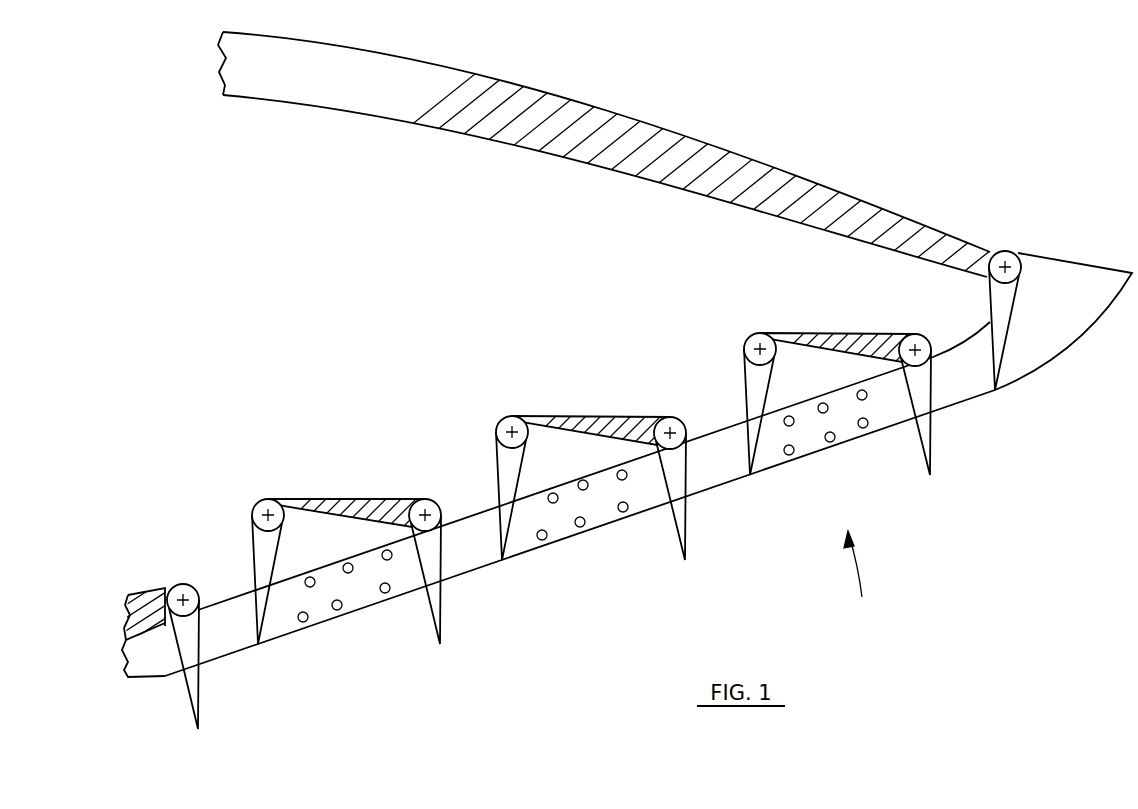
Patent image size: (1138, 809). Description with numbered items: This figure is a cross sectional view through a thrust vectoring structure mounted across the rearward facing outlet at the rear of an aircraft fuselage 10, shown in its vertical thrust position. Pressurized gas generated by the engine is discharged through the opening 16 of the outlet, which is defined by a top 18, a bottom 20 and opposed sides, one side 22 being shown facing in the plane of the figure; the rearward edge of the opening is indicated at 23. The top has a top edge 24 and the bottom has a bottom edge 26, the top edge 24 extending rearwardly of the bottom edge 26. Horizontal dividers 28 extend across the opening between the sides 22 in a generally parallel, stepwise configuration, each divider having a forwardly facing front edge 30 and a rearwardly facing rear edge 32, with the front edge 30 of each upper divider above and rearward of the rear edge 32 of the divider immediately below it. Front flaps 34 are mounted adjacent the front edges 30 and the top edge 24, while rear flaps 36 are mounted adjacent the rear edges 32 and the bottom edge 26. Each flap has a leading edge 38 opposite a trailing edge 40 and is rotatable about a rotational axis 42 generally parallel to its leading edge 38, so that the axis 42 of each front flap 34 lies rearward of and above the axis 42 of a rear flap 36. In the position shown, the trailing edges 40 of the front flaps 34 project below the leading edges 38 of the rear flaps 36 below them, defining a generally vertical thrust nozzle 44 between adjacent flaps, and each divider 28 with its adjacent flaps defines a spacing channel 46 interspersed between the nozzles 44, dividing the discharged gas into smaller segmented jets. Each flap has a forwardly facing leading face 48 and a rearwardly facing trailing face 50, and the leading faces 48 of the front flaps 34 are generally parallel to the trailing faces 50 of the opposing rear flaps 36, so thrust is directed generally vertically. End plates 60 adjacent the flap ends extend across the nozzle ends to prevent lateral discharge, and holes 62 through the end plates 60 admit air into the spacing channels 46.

The fuselage 10 is at (392, 70).
The opening 16 is at (859, 577).
The top 18 is at (878, 246).
The bottom 20 is at (152, 590).
The side 22 is at (613, 367).
The rearward edge of the opening 23 is at (820, 396).
The top edge 24 is at (984, 250).
The bottom edge 26 is at (164, 626).
The horizontal divider 28 is at (843, 336).
The front edge 30 is at (772, 333).
The rear edge 32 is at (930, 350).
The front flap 34 is at (990, 310).
The rear flap 36 is at (908, 392).
The leading edge 38 is at (1003, 251).
The trailing edge 40 is at (996, 391).
The rotational axis 42 is at (1012, 262).
The vertical thrust nozzle 44 is at (953, 384).
The spacing channel 46 is at (828, 429).
The leading face 48 is at (989, 294).
The trailing face 50 is at (1010, 340).
The end plate 60 is at (1110, 277).
The hole 62 is at (830, 441).